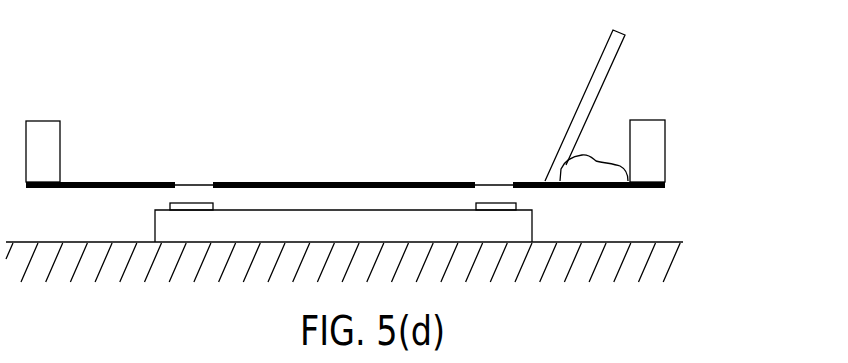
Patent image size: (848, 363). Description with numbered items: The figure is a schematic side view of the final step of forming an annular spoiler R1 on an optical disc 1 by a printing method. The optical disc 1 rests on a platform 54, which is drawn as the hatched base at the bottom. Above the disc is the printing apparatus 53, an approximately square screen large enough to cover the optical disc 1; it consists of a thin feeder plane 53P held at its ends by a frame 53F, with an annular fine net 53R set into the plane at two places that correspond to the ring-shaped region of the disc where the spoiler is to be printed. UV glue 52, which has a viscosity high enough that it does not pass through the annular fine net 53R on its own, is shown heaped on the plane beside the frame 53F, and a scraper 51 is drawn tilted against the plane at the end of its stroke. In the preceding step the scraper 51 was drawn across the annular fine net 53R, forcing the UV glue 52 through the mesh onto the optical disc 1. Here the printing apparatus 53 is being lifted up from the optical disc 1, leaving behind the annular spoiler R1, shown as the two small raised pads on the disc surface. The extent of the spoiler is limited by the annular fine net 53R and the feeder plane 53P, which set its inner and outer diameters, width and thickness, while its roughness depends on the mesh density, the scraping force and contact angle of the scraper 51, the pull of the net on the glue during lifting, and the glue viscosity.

The optical disc 1 is at (520, 226).
The scraper 51 is at (605, 50).
The UV glue 52 is at (592, 163).
The printing apparatus 53 is at (45, 128).
The frame 53F is at (665, 148).
The feeder plane 53P is at (355, 181).
The annular fine net 53R is at (192, 181).
The platform 54 is at (670, 258).
The annular spoiler R1 is at (172, 204).